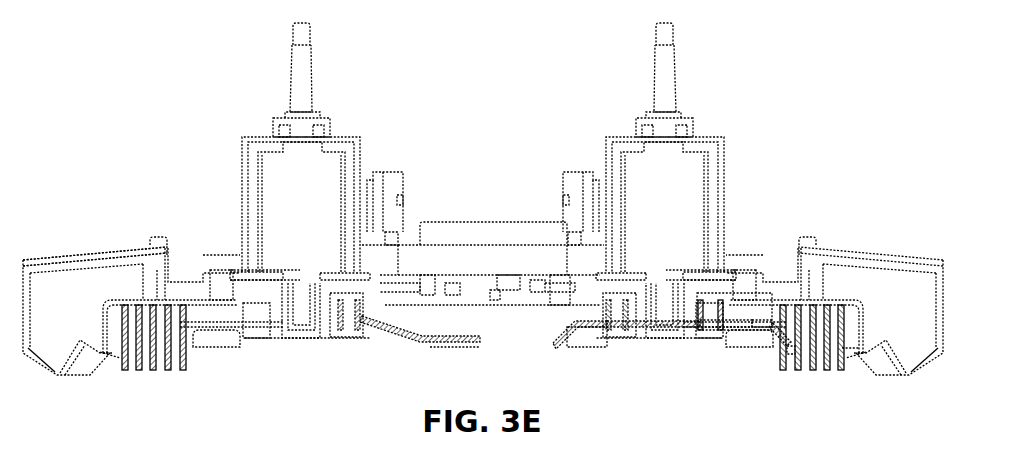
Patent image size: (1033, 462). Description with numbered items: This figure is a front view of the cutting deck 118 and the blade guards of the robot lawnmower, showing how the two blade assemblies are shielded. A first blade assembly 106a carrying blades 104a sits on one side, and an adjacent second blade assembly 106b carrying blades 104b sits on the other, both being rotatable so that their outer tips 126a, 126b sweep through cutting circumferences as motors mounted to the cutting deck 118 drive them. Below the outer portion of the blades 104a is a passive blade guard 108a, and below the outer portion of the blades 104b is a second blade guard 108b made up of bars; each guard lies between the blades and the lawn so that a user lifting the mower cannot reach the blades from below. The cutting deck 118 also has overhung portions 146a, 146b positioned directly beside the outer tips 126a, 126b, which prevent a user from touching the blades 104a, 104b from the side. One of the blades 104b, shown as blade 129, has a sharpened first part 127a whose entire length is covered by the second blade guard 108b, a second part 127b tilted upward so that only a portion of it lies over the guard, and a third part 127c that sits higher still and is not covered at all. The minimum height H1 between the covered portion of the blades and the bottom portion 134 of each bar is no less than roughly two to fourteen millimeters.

The cutting deck 118 is at (103, 252).
The blade guard 108a is at (172, 305).
The overhung portion 146a is at (161, 306).
The blade assembly 106a is at (301, 343).
The blades 104a is at (420, 334).
The outer tips 126a is at (477, 345).
The second blade assembly 106b is at (656, 347).
The blades 104b is at (751, 318).
The blade 129 is at (726, 323).
The second part 127b is at (781, 337).
The third part 127c is at (772, 327).
The first part 127a is at (795, 357).
The minimum height H1 is at (783, 345).
The bottom portion 134 is at (793, 358).
The second blade guard 108b is at (838, 294).
The overhung portion 146b is at (804, 306).
The outer tips 126b is at (843, 348).